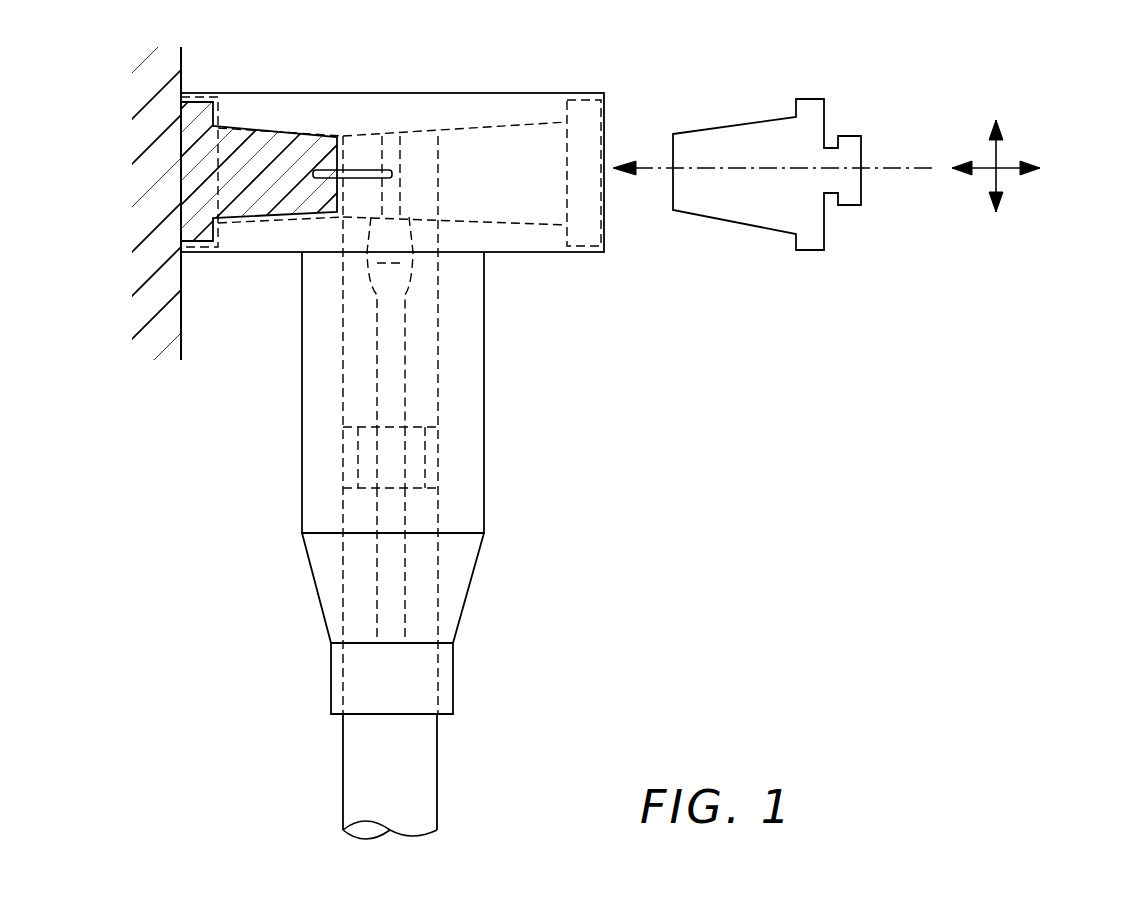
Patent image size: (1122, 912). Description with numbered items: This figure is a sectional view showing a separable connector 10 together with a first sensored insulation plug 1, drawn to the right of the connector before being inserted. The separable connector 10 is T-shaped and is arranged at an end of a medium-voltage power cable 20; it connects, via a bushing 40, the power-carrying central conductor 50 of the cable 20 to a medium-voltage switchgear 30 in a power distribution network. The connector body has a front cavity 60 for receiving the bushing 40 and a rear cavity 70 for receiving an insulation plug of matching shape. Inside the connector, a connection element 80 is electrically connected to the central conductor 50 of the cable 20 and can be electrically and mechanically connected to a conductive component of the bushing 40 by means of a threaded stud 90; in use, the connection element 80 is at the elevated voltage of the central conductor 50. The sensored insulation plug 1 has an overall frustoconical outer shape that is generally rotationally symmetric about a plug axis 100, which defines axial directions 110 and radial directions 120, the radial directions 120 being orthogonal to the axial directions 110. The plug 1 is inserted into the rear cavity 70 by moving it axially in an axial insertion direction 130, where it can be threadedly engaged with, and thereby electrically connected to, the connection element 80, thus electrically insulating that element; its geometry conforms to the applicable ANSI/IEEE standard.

The sensored insulation plug 1 is at (735, 127).
The separable connector 10 is at (302, 447).
The medium-voltage power cable 20 is at (360, 775).
The medium-voltage switchgear 30 is at (150, 305).
The bushing 40 is at (284, 182).
The central conductor 50 is at (388, 580).
The front cavity 60 is at (233, 140).
The rear cavity 70 is at (517, 145).
The connection element 80 is at (388, 148).
The threaded stud 90 is at (365, 168).
The plug axis 100 is at (899, 170).
The axial directions 110 is at (1005, 172).
The radial directions 120 is at (990, 183).
The axial insertion direction 130 is at (650, 170).